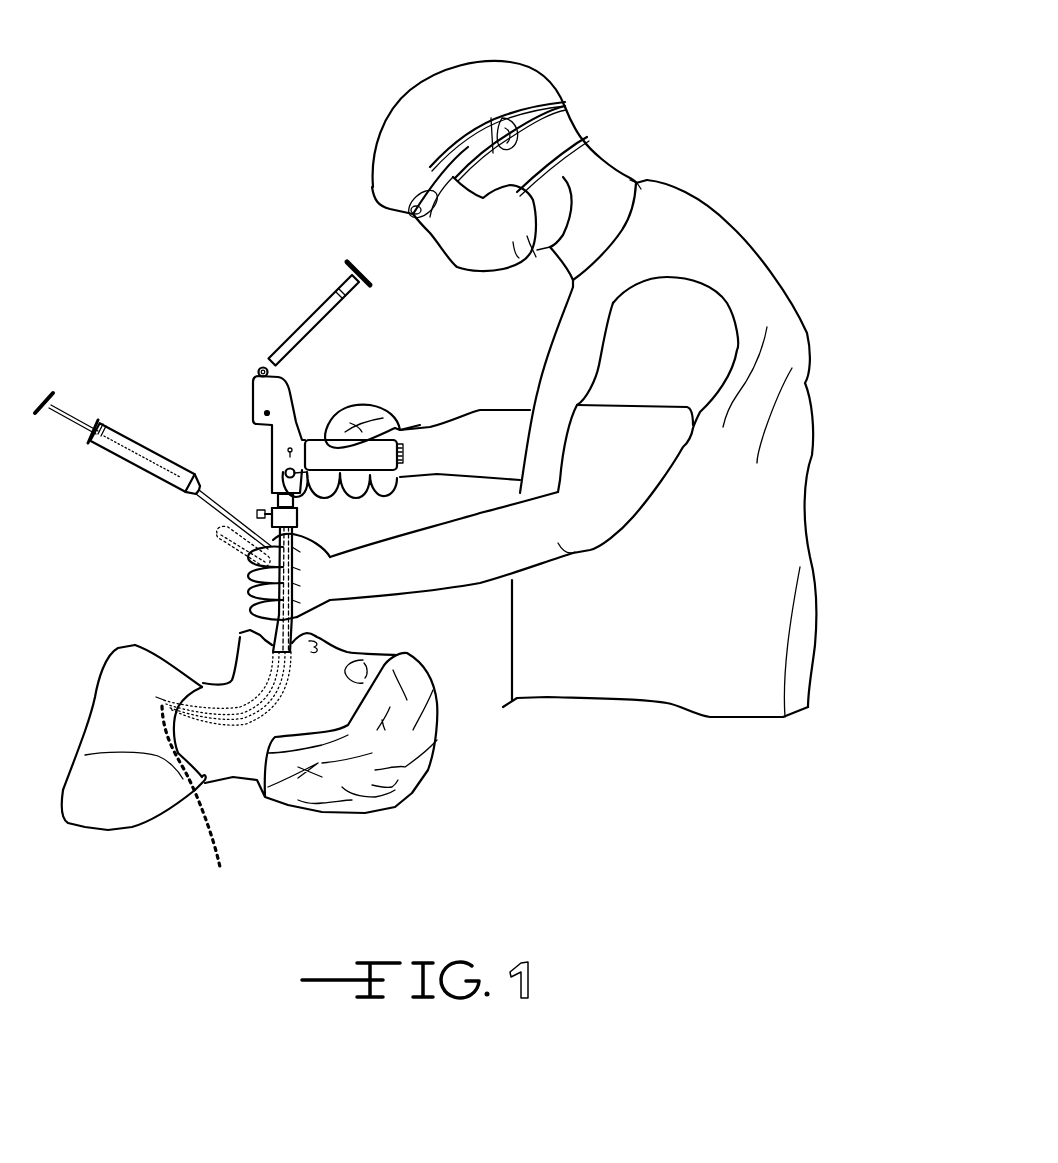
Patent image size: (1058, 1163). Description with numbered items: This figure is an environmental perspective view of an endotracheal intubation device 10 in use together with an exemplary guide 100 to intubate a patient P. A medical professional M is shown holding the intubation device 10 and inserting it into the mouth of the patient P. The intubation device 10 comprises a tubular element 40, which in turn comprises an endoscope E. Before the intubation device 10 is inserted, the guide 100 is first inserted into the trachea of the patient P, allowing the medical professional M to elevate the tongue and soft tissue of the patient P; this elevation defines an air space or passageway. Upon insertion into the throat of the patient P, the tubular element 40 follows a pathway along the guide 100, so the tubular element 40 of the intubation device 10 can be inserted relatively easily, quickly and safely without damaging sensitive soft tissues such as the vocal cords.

The medical professional M is at (640, 127).
The intubation device 10 is at (253, 349).
The tubular element 40 is at (297, 543).
The guide 100 is at (212, 535).
The patient P is at (157, 641).
The endoscope E is at (194, 801).